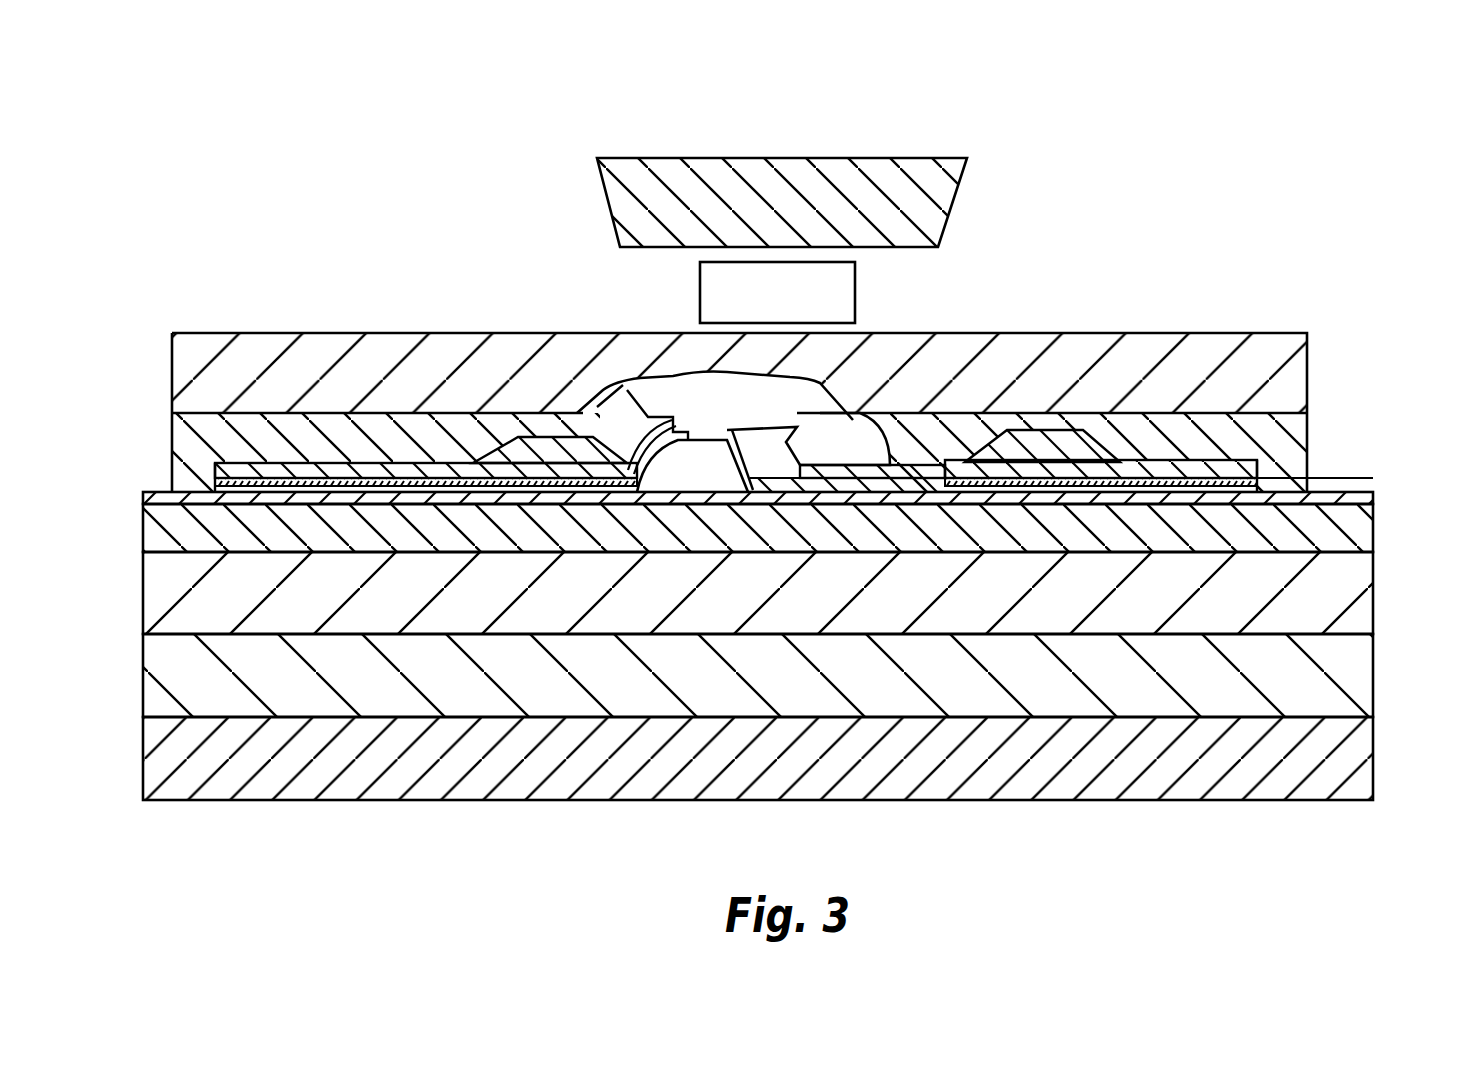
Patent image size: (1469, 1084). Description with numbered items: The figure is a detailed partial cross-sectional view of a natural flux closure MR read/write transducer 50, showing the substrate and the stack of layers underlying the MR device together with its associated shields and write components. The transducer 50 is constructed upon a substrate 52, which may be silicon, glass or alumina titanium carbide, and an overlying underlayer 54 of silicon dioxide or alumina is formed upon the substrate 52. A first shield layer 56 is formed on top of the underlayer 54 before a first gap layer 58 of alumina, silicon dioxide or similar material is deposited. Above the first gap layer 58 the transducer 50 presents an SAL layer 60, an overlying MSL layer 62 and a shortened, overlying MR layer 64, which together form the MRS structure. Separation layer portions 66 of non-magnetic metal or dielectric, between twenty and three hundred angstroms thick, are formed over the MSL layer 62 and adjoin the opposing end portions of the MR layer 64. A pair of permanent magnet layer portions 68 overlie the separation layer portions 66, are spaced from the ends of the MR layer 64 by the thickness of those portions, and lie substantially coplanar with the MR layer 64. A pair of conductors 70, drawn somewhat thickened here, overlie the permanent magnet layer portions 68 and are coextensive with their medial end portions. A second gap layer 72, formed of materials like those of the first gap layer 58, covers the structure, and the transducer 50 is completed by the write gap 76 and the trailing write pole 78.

The MR read/write transducer 50 is at (1093, 843).
The substrate 52 is at (1373, 777).
The underlayer 54 is at (1373, 688).
The first shield layer 56 is at (1373, 605).
The first gap layer 58 is at (1373, 542).
The SAL layer 60 is at (1373, 490).
The MSL layer 62 is at (912, 475).
The MR layer 64 is at (830, 437).
The separation layer portions 66 is at (682, 420).
The permanent magnet layer portions 68 is at (263, 462).
The conductors 70 is at (637, 403).
The second gap layer 72 is at (1307, 377).
The write gap 76 is at (700, 303).
The trailing write pole 78 is at (783, 157).